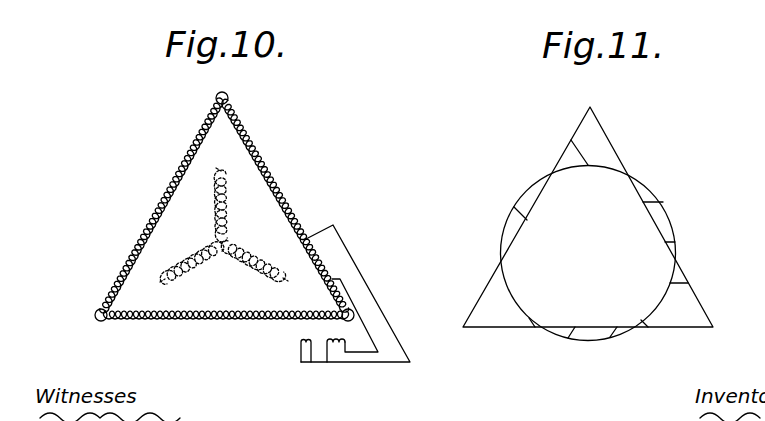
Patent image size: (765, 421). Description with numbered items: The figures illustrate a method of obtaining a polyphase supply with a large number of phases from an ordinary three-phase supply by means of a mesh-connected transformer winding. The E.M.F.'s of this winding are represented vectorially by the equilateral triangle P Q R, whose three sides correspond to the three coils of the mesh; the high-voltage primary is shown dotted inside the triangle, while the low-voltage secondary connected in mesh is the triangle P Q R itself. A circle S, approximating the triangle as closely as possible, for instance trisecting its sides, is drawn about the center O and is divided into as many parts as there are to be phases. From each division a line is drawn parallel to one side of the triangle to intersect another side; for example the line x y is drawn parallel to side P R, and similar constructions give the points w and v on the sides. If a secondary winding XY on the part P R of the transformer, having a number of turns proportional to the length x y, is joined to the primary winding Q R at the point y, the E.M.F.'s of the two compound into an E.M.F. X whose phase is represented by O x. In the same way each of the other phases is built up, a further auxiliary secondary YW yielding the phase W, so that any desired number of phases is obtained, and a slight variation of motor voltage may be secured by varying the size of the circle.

In FIG. 10, the vertex of the equilateral triangle P is at (220, 327).
In FIG. 11, the vertex of the equilateral triangle P is at (462, 340).
In FIG. 10, the vertex of the equilateral triangle Q is at (174, 197).
In FIG. 11, the vertex of the equilateral triangle Q is at (608, 101).
In FIG. 11, the vertex of the equilateral triangle R is at (727, 332).
In FIG. 10, the point on side Q R w is at (285, 206).
In FIG. 11, the point on side Q R w is at (657, 243).
In FIG. 11, the point on circle S x is at (664, 283).
In FIG. 10, the junction point on primary winding Q R y is at (355, 293).
In FIG. 11, the junction point on primary winding Q R y is at (704, 283).
In FIG. 11, the point on side Q R v is at (690, 243).
In FIG. 11, the circle S is at (661, 204).
In FIG. 11, the center of the circle O is at (588, 253).
In FIG. 10, the compounded E.M.F. terminal W is at (312, 362).
In FIG. 10, the compounded E.M.F. X is at (328, 362).
In FIG. 10, the secondary winding YW is at (310, 343).
In FIG. 10, the secondary winding XY is at (339, 335).